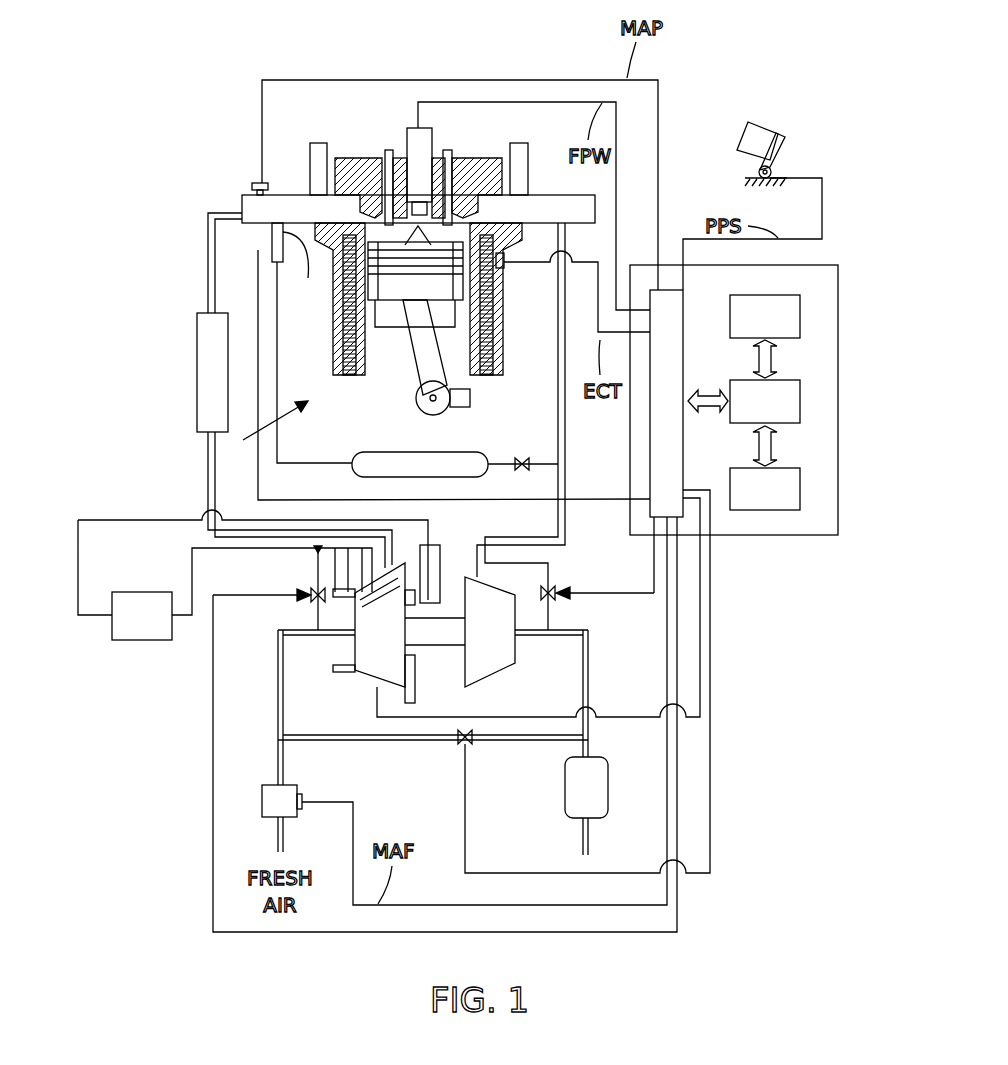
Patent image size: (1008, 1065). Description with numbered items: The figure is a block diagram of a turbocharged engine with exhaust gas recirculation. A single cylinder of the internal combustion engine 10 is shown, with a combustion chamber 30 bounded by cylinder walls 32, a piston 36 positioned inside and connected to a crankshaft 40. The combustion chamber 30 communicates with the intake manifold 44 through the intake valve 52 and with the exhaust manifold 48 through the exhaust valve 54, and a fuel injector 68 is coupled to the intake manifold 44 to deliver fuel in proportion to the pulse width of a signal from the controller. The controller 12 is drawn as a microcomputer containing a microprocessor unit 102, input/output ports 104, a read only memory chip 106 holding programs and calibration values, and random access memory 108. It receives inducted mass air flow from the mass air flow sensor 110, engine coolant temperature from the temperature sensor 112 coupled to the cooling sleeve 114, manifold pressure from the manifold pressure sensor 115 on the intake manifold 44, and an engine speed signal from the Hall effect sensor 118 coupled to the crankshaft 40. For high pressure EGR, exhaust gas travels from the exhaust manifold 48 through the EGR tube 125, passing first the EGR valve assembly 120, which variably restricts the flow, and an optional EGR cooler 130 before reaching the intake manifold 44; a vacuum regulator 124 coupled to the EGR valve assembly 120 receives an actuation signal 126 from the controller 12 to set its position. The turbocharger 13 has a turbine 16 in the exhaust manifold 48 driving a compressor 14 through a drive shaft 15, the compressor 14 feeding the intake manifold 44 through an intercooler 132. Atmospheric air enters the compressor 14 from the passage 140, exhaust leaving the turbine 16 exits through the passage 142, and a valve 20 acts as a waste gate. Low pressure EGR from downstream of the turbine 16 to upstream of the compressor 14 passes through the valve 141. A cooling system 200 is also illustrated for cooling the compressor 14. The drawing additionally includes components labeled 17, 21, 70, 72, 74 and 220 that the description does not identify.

The internal combustion engine 10 is at (262, 438).
The controller 12 is at (842, 282).
The turbocharger 13 is at (437, 692).
The compressor 14 is at (372, 640).
The drive shaft 15 is at (443, 622).
The turbine 16 is at (500, 655).
The charge air passage 17 is at (497, 718).
The valve 20 is at (562, 592).
The compressor bypass valve 21 is at (300, 590).
The combustion chamber 30 is at (340, 318).
The cylinder walls 32 is at (362, 372).
The piston 36 is at (405, 302).
The crankshaft 40 is at (420, 407).
The intake manifold 44 is at (300, 203).
The exhaust manifold 48 is at (563, 210).
The intake valve 52 is at (385, 222).
The exhaust valve 54 is at (455, 222).
The fuel injector 68 is at (410, 142).
The accelerator pedal 70 is at (786, 148).
The foot 72 is at (750, 145).
The pedal position sensor 74 is at (758, 175).
The microprocessor unit 102 is at (802, 405).
The input/output ports 104 is at (685, 308).
The read only memory chip 106 is at (802, 323).
The random access memory 108 is at (802, 487).
The mass air flow sensor 110 is at (302, 796).
The temperature sensor 112 is at (510, 264).
The cooling sleeve 114 is at (495, 338).
The manifold pressure sensor 115 is at (254, 186).
The Hall effect sensor 118 is at (472, 400).
The EGR valve assembly 120 is at (308, 268).
The vacuum regulator 124 is at (258, 252).
The EGR tube 125 is at (330, 440).
The actuation signal 126 is at (270, 500).
The EGR cooler 130 is at (428, 455).
The intercooler 132 is at (197, 368).
The passage 140 is at (277, 700).
The valve 141 is at (470, 745).
The passage 142 is at (592, 662).
The cooling system 200 is at (95, 686).
The positive crankcase ventilation valve 220 is at (137, 620).